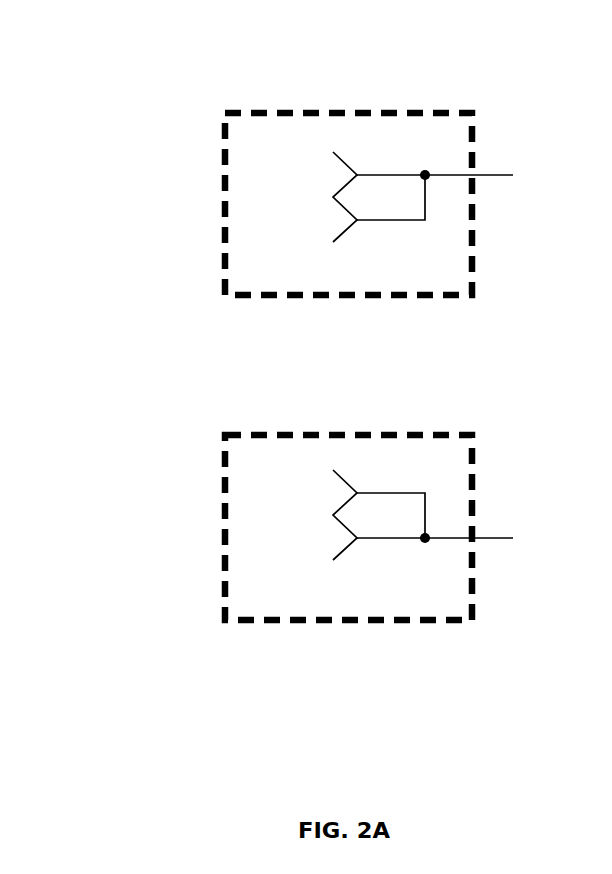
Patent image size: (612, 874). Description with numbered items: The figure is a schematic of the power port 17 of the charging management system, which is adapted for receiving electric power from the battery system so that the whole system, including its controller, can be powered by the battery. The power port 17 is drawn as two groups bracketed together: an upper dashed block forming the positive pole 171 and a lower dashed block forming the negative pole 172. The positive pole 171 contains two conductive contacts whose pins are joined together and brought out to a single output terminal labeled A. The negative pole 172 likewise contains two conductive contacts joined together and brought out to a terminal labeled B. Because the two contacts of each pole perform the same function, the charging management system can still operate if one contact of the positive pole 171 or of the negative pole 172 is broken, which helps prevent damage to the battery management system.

The power port 17 is at (97, 32).
The positive pole 171 is at (307, 111).
The negative pole 172 is at (307, 433).